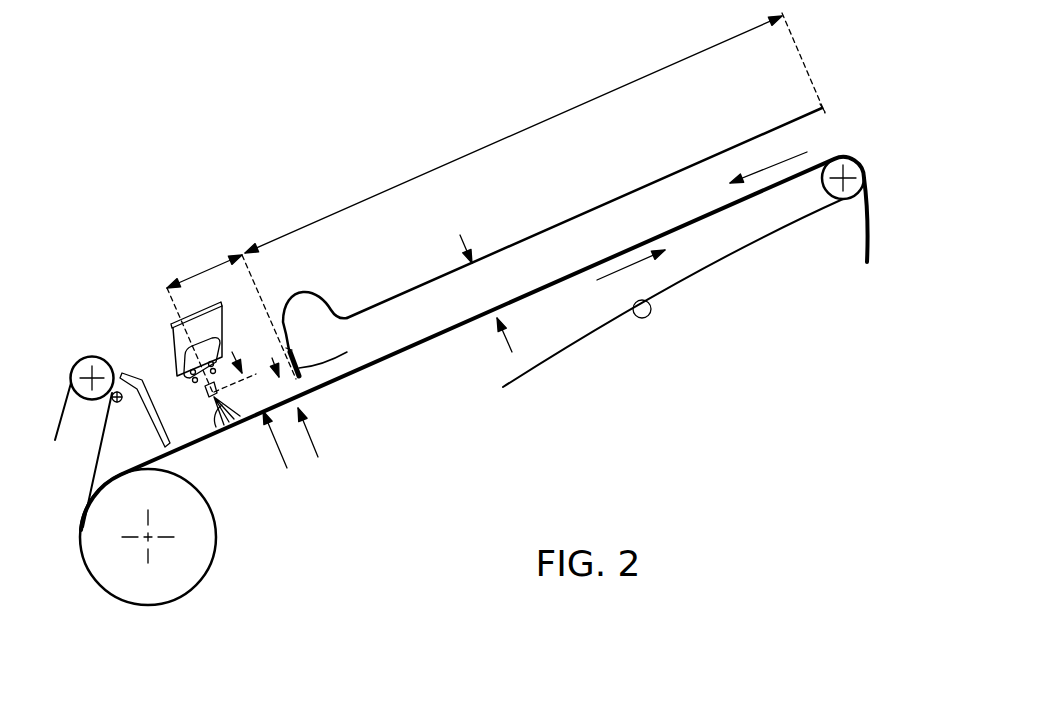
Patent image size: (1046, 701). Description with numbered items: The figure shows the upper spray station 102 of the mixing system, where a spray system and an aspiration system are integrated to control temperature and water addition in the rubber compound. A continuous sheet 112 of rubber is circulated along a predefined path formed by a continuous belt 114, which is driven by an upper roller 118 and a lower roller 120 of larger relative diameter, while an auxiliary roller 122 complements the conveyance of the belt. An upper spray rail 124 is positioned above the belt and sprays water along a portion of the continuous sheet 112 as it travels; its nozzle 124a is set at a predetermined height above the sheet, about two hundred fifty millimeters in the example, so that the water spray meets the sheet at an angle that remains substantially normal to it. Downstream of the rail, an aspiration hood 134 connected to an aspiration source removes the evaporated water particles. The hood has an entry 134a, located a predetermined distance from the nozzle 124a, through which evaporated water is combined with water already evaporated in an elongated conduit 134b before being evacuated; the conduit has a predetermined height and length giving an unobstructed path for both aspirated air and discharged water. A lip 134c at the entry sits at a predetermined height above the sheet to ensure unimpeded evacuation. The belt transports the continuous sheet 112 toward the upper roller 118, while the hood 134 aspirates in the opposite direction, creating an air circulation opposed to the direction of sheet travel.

The upper spray station 102 is at (345, 197).
The continuous sheet 112 is at (424, 343).
The continuous belt 114 is at (792, 229).
The upper roller 118 is at (846, 157).
The lower roller 120 is at (178, 579).
The auxiliary roller 122 is at (84, 358).
The upper spray rail 124 is at (171, 340).
The nozzle 124a is at (215, 385).
The aspiration hood 134 is at (313, 310).
The entry 134a is at (291, 398).
The elongated conduit 134b is at (587, 233).
The lip 134c is at (343, 347).